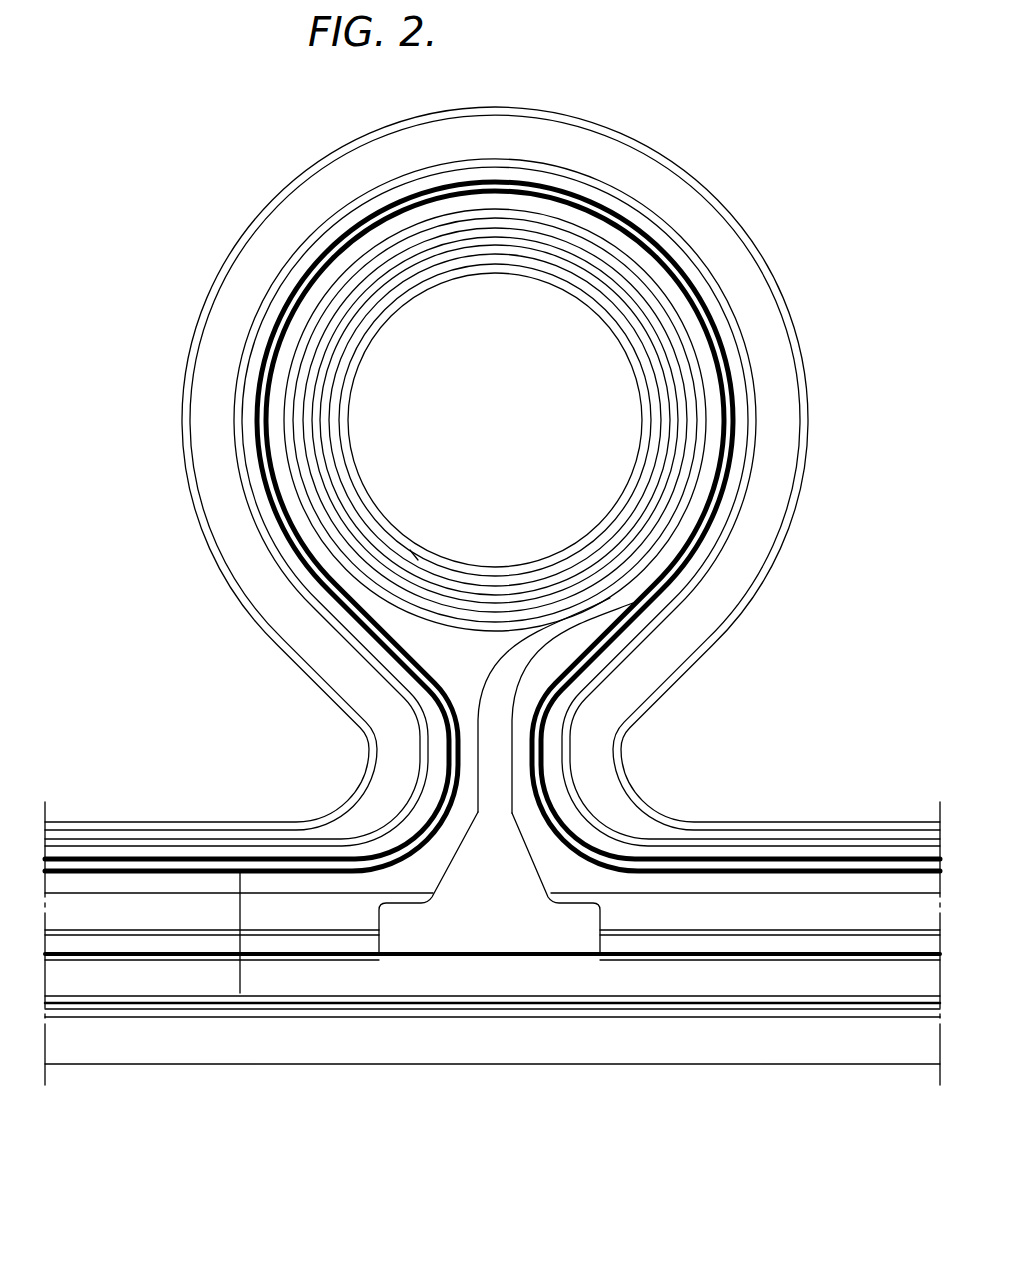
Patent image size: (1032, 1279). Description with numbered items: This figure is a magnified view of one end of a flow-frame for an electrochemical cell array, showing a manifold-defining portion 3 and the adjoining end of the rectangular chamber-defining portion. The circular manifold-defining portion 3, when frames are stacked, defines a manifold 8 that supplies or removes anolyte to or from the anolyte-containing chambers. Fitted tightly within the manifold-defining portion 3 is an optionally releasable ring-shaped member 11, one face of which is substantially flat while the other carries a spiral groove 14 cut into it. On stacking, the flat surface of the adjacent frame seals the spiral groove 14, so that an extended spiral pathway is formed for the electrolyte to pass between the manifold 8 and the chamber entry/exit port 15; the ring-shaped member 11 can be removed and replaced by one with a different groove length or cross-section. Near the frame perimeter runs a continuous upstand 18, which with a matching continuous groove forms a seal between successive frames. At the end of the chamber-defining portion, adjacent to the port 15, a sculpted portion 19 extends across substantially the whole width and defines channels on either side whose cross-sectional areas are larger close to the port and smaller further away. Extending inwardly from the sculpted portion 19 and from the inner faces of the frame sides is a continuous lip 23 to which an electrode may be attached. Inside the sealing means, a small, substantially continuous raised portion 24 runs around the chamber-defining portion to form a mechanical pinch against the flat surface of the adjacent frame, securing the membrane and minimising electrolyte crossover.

The manifold-defining portion 3 is at (205, 373).
The manifold 8 is at (428, 333).
The ring-shaped member 11 is at (453, 205).
The spiral groove 14 is at (667, 318).
The chamber entry/exit port 15 is at (503, 850).
The continuous upstand 18 is at (140, 863).
The sculpted portion 19 is at (757, 977).
The continuous lip 23 is at (388, 1050).
The raised portion 24 is at (268, 933).